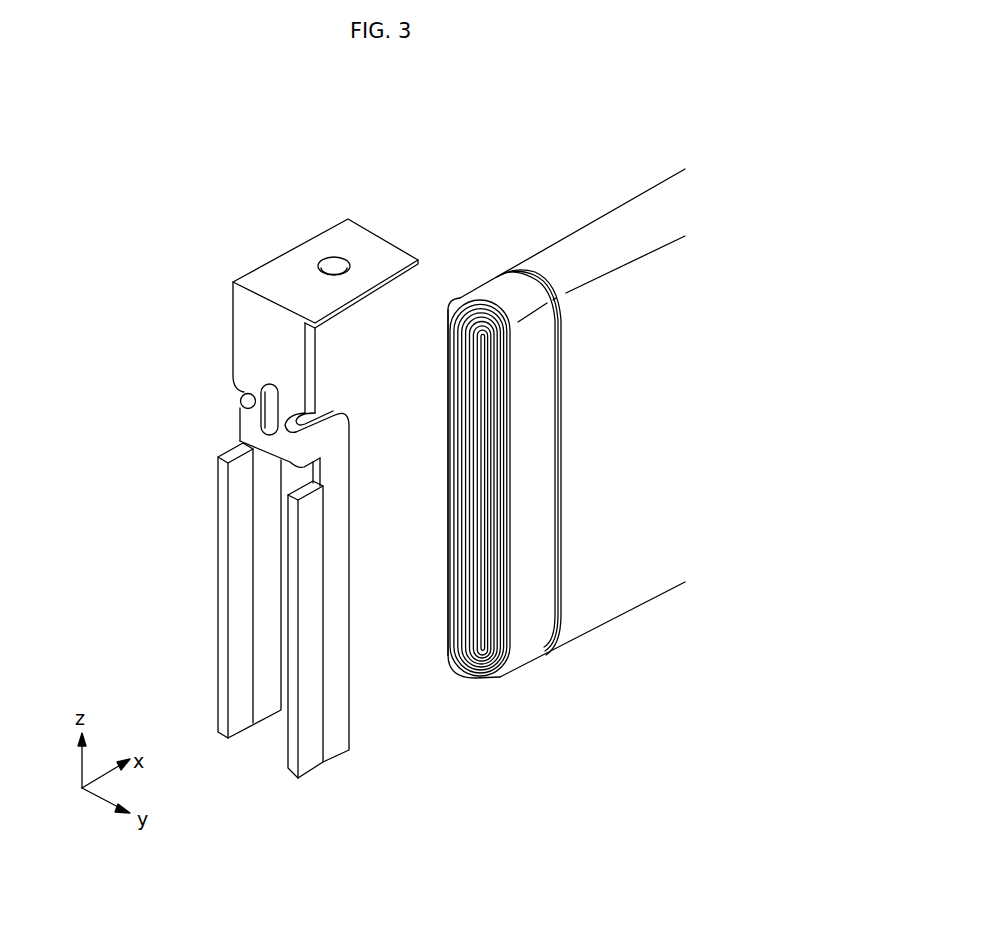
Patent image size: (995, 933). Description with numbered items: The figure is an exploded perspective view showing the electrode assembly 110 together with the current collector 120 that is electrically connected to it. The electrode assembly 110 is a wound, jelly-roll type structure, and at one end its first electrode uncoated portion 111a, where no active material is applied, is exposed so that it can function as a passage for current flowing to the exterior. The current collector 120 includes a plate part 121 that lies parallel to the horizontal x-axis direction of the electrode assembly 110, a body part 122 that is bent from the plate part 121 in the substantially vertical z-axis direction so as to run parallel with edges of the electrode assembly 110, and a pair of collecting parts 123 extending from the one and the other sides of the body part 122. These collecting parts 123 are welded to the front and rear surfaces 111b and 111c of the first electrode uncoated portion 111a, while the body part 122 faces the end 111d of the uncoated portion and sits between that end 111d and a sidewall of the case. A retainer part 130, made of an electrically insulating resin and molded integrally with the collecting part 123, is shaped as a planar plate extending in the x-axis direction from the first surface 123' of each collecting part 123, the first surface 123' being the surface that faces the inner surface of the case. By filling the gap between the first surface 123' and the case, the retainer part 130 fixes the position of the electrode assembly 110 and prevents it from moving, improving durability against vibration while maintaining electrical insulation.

The electrode assembly 110 is at (535, 451).
The first electrode uncoated portion 111a is at (453, 487).
The front surface of the first electrode uncoated portion 111b is at (533, 637).
The rear surface of the first electrode uncoated portion 111c is at (449, 602).
The end of the first electrode uncoated portion 111d is at (476, 670).
The current collector 120 is at (279, 513).
The plate part 121 is at (362, 240).
The body part 122 is at (248, 334).
The collecting part 123 is at (320, 627).
The first surface of the collecting part 123' is at (257, 628).
The retainer part 130 is at (312, 762).